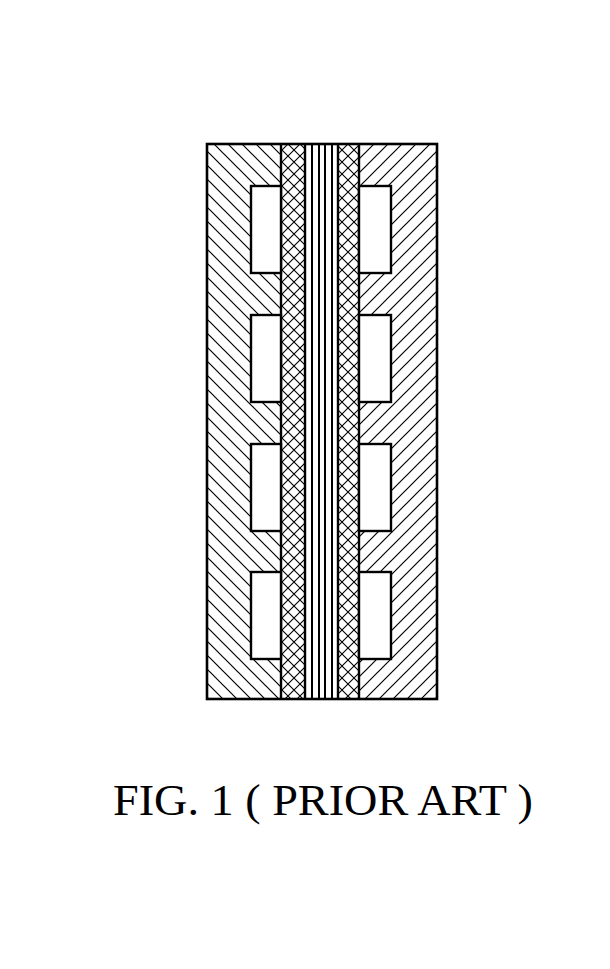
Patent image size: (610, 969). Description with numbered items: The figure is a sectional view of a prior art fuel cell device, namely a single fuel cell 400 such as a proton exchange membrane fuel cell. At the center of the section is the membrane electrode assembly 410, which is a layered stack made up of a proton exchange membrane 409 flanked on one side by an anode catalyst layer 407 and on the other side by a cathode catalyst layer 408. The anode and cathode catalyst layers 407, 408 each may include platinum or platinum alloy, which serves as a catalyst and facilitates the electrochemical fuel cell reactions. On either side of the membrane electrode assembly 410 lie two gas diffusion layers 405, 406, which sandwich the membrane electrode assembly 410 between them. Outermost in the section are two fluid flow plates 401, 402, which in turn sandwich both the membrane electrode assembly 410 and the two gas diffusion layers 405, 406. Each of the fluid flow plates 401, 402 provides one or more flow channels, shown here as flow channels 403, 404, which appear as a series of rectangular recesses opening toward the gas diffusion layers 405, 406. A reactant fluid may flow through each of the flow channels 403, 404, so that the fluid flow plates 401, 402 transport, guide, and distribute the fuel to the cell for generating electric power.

The single fuel cell 400 is at (493, 118).
The fluid flow plate 401 is at (420, 210).
The fluid flow plate 402 is at (221, 209).
The flow channel 403 is at (380, 366).
The flow channel 404 is at (262, 366).
The gas diffusion layer 405 is at (347, 700).
The gas diffusion layer 406 is at (293, 700).
The anode catalyst layer 407 is at (332, 144).
The cathode catalyst layer 408 is at (310, 144).
The proton exchange membrane 409 is at (321, 144).
The membrane electrode assembly 410 is at (321, 413).